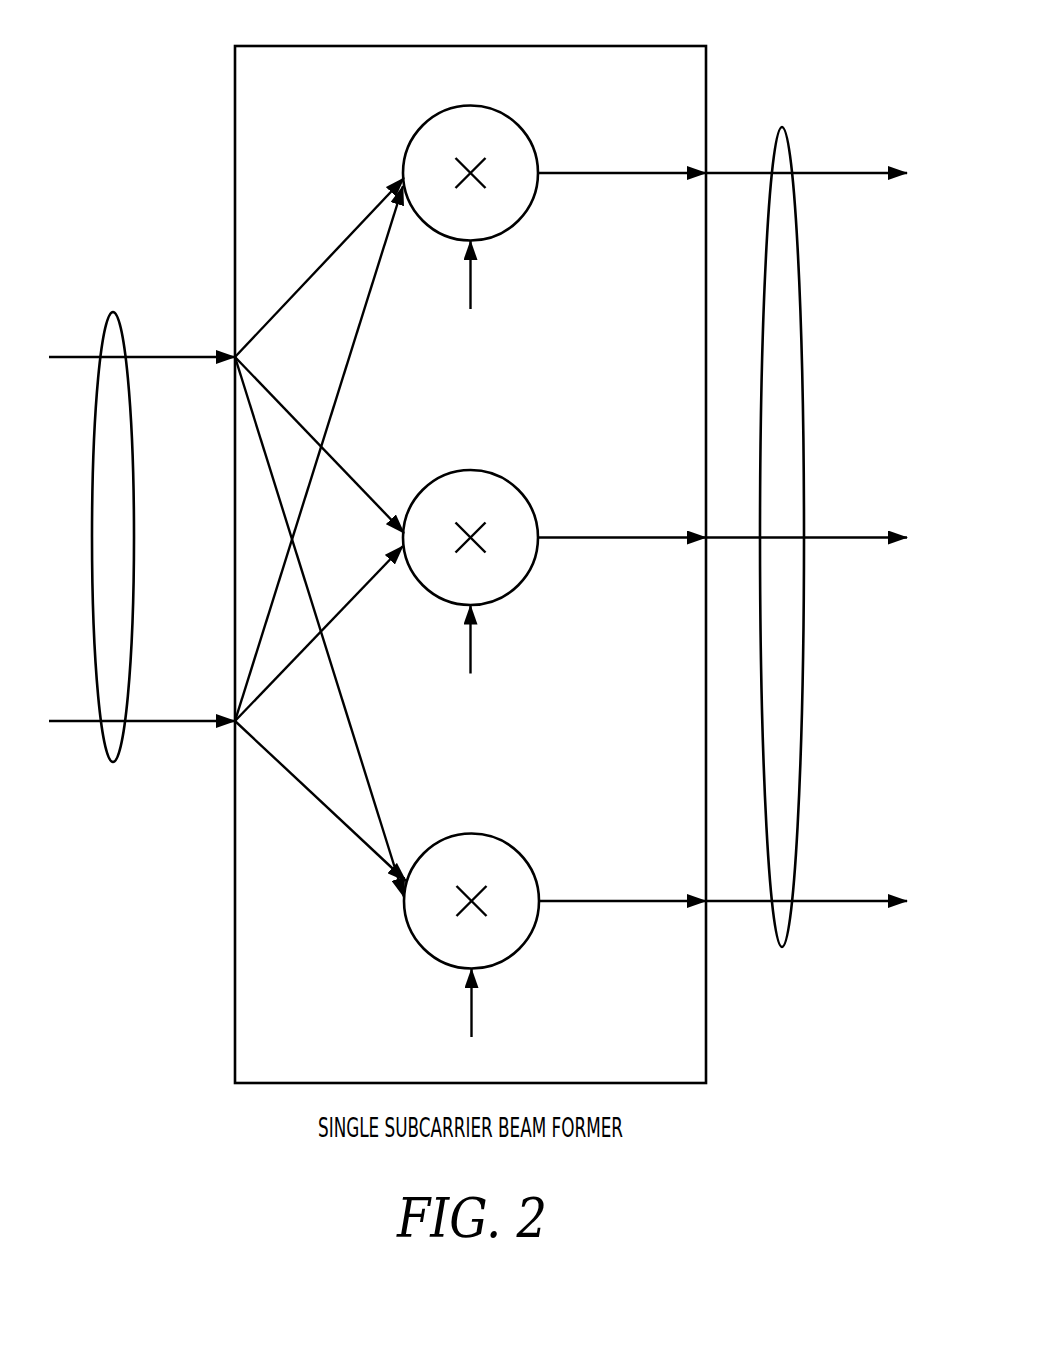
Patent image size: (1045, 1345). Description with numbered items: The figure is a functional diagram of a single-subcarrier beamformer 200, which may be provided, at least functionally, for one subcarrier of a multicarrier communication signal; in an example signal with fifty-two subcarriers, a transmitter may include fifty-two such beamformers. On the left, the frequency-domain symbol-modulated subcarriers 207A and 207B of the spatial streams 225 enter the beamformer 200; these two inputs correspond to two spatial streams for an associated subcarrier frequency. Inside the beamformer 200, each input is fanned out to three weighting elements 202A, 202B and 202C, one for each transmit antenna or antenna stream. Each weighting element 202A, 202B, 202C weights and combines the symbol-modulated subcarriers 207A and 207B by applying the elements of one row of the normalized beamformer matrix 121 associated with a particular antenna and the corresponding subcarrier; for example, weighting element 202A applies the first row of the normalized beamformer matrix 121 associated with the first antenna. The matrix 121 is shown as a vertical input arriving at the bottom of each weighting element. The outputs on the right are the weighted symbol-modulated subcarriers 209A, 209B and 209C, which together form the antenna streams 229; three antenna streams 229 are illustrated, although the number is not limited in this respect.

The beamformer 200 is at (253, 45).
The weighting element 202A is at (470, 106).
The weighting element 202B is at (470, 470).
The weighting element 202C is at (472, 834).
The normalized beamformer matrix 121 is at (470, 291).
The symbol-modulated subcarrier 207A is at (172, 360).
The symbol-modulated subcarrier 207B is at (172, 724).
The weighted symbol-modulated subcarrier 209A is at (862, 177).
The weighted symbol-modulated subcarrier 209B is at (862, 542).
The weighted symbol-modulated subcarrier 209C is at (862, 905).
The spatial stream 225 is at (113, 312).
The antenna stream 229 is at (782, 128).